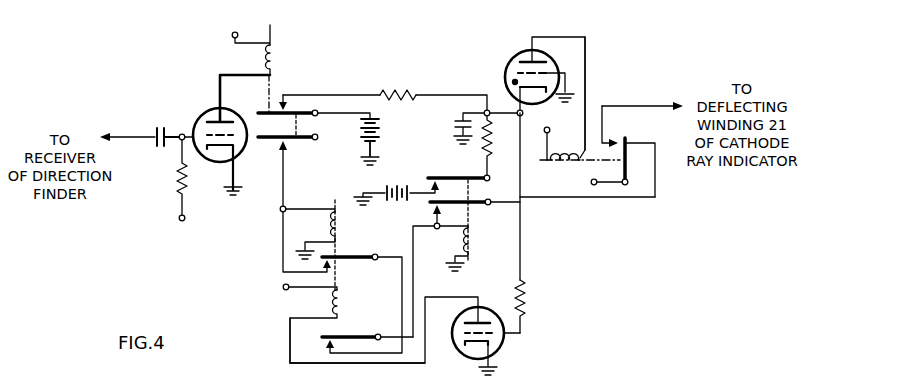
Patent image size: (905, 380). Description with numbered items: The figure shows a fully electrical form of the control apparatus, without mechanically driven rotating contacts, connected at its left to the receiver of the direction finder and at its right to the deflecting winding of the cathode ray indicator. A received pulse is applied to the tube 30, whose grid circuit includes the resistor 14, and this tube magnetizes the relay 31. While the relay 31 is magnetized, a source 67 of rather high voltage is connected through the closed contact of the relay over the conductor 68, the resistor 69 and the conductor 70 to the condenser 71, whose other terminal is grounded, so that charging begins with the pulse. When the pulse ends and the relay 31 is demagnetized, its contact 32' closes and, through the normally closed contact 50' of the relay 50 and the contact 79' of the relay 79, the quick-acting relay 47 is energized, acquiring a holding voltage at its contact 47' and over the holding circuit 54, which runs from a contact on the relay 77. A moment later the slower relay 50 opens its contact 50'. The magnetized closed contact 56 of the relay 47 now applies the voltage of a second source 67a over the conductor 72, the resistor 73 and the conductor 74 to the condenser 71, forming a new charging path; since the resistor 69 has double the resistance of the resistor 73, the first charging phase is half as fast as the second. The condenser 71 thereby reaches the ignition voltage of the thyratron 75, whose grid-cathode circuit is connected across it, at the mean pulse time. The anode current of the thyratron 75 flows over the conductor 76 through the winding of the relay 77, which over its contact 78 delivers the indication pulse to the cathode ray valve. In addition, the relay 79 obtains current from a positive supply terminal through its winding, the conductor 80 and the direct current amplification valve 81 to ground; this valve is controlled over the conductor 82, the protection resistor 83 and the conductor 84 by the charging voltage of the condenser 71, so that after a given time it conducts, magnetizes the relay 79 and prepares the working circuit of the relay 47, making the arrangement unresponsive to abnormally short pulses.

The grid resistor 14 is at (178, 190).
The tube 30 is at (206, 112).
The relay 31 is at (275, 66).
The demagnetized closed contact 32' is at (301, 168).
The relay 47 is at (471, 248).
The magnetized closed contact 47' is at (417, 271).
The relay 50 is at (329, 245).
The normally closed contact 50' is at (342, 282).
The holding circuit 54 is at (600, 198).
The magnetized closed contact 56 is at (425, 190).
The voltage source 67 is at (380, 136).
The voltage source 67a is at (402, 188).
The conductor 68 is at (333, 94).
The resistor 69 is at (410, 88).
The conductor 70 is at (470, 90).
The condenser 71 is at (454, 126).
The conductor 72 is at (480, 174).
The resistor 73 is at (487, 164).
The conductor 74 is at (499, 108).
The thyratron 75 is at (514, 56).
The conductor 76 is at (587, 80).
The relay 77 is at (570, 164).
The magnetized closed contact 78 is at (617, 141).
The relay 79 is at (314, 321).
The magnetized closed contact 79' is at (367, 327).
The conductor 80 is at (286, 352).
The direct current amplification electronic valve 81 is at (452, 330).
The conductor 82 is at (522, 246).
The protection resistor 83 is at (532, 302).
The conductor 84 is at (510, 334).